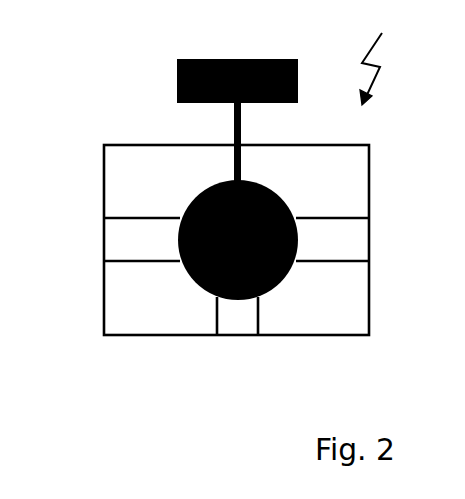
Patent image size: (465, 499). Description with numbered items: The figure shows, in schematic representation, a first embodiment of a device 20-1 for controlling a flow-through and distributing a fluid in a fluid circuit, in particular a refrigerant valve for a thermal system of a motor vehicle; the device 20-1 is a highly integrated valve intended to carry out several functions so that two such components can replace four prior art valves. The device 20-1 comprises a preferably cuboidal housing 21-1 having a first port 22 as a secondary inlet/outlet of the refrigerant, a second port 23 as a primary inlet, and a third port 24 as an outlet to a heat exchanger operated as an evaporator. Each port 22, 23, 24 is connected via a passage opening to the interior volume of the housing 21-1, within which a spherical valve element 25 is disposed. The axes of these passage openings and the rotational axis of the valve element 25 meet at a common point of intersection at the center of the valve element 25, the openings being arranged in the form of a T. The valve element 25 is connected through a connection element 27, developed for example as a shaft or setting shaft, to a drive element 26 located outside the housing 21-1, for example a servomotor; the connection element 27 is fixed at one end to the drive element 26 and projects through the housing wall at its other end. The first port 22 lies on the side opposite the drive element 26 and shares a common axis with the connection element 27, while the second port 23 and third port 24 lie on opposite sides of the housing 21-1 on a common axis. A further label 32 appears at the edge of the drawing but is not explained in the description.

The device 20-1 is at (382, 54).
The housing 21-1 is at (116, 170).
The first port 22 is at (238, 329).
The second port 23 is at (116, 244).
The third port 24 is at (358, 244).
The valve element 25 is at (195, 280).
The drive element 26 is at (202, 60).
The connection element 27 is at (234, 123).
The flow path 32 is at (456, 233).